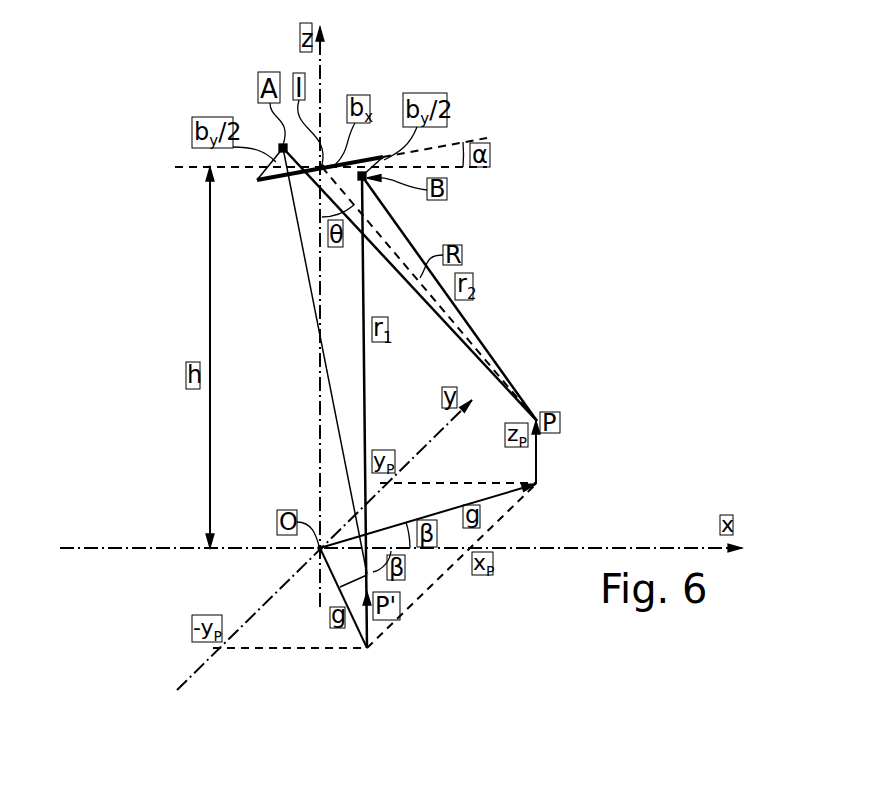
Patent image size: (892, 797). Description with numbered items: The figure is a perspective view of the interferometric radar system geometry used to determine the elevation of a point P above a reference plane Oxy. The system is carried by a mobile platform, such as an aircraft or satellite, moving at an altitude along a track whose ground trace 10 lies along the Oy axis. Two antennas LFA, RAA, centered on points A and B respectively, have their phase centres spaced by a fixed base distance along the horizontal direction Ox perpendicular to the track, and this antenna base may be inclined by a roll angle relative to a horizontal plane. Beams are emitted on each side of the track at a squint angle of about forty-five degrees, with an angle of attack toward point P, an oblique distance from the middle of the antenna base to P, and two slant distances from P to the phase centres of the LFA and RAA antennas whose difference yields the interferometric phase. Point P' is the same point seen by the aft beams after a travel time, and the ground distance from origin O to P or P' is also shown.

The ground trace 10 is at (130, 546).
The LFA antenna LFA is at (268, 126).
The RAA antenna RAA is at (378, 182).